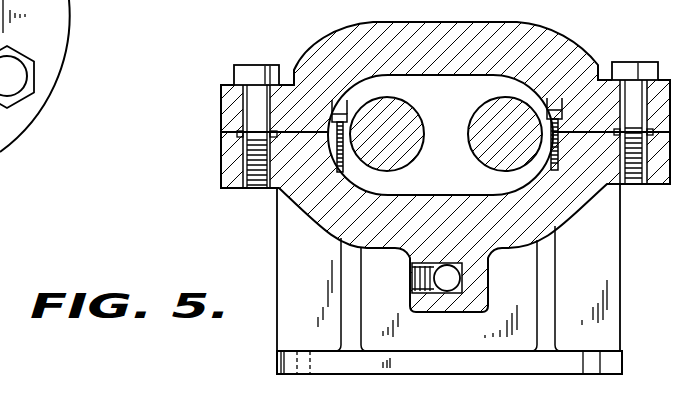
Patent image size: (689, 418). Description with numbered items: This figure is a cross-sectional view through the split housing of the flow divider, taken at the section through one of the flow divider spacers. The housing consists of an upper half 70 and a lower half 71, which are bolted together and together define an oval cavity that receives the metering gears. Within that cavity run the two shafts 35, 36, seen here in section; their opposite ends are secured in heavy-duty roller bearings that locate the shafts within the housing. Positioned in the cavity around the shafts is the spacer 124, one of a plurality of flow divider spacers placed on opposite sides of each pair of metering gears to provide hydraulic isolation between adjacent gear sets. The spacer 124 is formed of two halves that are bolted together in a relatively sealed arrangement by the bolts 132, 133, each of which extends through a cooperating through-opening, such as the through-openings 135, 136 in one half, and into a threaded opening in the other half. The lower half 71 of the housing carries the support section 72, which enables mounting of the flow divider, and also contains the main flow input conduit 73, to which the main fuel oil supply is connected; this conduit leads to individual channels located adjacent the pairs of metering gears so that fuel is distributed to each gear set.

The upper half 70 is at (462, 22).
The lower half 71 is at (311, 230).
The support section 72 is at (278, 354).
The main flow input conduit 73 is at (450, 282).
The spacer 124 is at (407, 193).
The bolt 132 is at (333, 110).
The bolt 133 is at (565, 100).
The through-opening 135 is at (340, 112).
The through-opening 136 is at (557, 98).
The shaft 35 is at (402, 146).
The shaft 36 is at (523, 146).